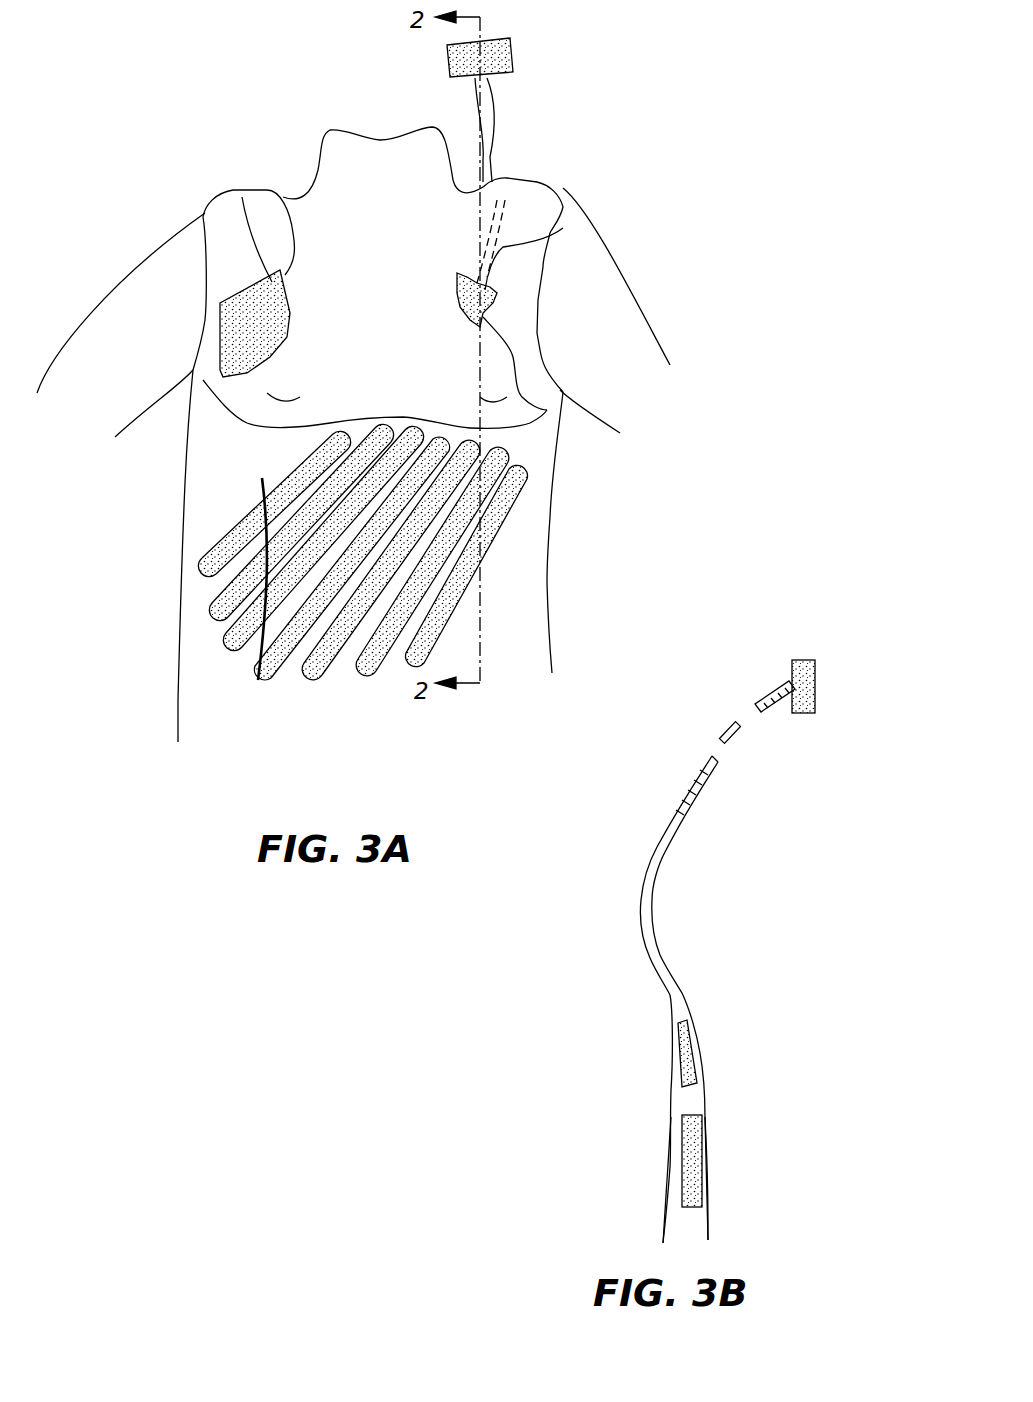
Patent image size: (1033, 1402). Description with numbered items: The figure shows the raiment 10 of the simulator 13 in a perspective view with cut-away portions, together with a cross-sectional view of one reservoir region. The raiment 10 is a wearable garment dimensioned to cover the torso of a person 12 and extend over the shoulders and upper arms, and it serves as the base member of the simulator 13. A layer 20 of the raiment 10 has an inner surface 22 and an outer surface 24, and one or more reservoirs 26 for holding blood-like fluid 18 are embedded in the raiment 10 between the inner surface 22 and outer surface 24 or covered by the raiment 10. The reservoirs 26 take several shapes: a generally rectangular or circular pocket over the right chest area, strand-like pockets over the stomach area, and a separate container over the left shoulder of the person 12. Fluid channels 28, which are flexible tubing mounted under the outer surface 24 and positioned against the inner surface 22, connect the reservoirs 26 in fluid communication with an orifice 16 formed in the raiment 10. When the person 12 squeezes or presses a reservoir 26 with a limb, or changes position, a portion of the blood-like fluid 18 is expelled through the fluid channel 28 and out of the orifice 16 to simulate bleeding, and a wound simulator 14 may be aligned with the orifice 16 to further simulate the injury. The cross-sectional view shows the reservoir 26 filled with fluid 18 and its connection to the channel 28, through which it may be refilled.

In FIG. 3A, the raiment 10 is at (553, 560).
In FIG. 3A, the person 12 is at (590, 280).
In FIG. 3A, the simulator 13 is at (352, 117).
In FIG. 3A, the wound simulator 14 is at (233, 330).
In FIG. 3A, the orifice 16 is at (233, 300).
In FIG. 3B, the orifice 16 is at (687, 800).
In FIG. 3A, the blood-like fluid 18 is at (280, 272).
In FIG. 3B, the blood-like fluid 18 is at (802, 660).
In FIG. 3A, the layer 20 is at (200, 455).
In FIG. 3B, the layer 20 is at (673, 993).
In FIG. 3B, the inner surface 22 is at (708, 1190).
In FIG. 3B, the outer surface 24 is at (672, 1180).
In FIG. 3A, the reservoir 26 is at (222, 193).
In FIG. 3B, the reservoir 26 is at (807, 713).
In FIG. 3A, the fluid channel 28 is at (497, 220).
In FIG. 3B, the fluid channel 28 is at (717, 762).